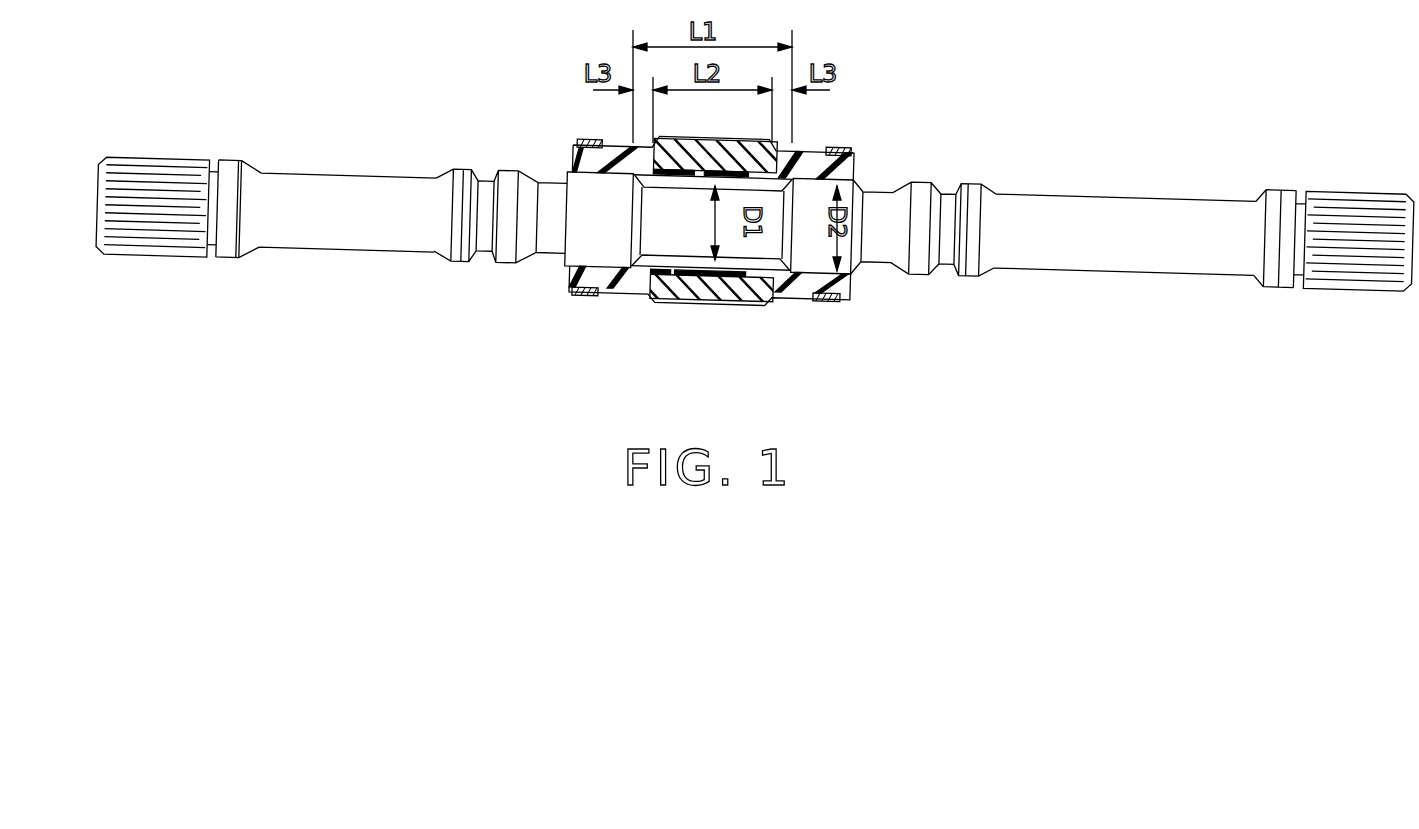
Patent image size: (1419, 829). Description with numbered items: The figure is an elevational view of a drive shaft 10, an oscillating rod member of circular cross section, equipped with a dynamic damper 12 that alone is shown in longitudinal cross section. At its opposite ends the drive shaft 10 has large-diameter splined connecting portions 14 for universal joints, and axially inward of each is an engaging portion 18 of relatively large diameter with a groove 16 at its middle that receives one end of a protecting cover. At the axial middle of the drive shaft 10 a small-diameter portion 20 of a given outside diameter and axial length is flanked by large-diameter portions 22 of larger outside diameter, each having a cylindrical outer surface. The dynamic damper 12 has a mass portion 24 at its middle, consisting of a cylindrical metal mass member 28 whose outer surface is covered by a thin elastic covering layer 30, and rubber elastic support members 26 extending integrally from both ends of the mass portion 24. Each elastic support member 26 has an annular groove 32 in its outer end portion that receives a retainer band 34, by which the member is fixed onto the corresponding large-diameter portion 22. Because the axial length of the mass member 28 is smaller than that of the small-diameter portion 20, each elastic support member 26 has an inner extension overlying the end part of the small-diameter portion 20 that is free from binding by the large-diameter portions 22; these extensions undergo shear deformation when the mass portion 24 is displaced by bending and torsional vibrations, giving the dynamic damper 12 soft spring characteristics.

The drive shaft 10 is at (1136, 186).
The dynamic damper 12 is at (635, 325).
The splined connecting portion 14 is at (157, 253).
The groove 16 is at (485, 250).
The engaging portion 18 is at (462, 175).
The small-diameter portion 20 is at (752, 253).
The large-diameter portion 22 is at (610, 252).
The mass portion 24 is at (703, 322).
The elastic support member 26 is at (611, 136).
The mass member 28 is at (690, 145).
The elastic covering layer 30 is at (668, 303).
The annular groove 32 is at (578, 295).
The retainer band 34 is at (590, 143).